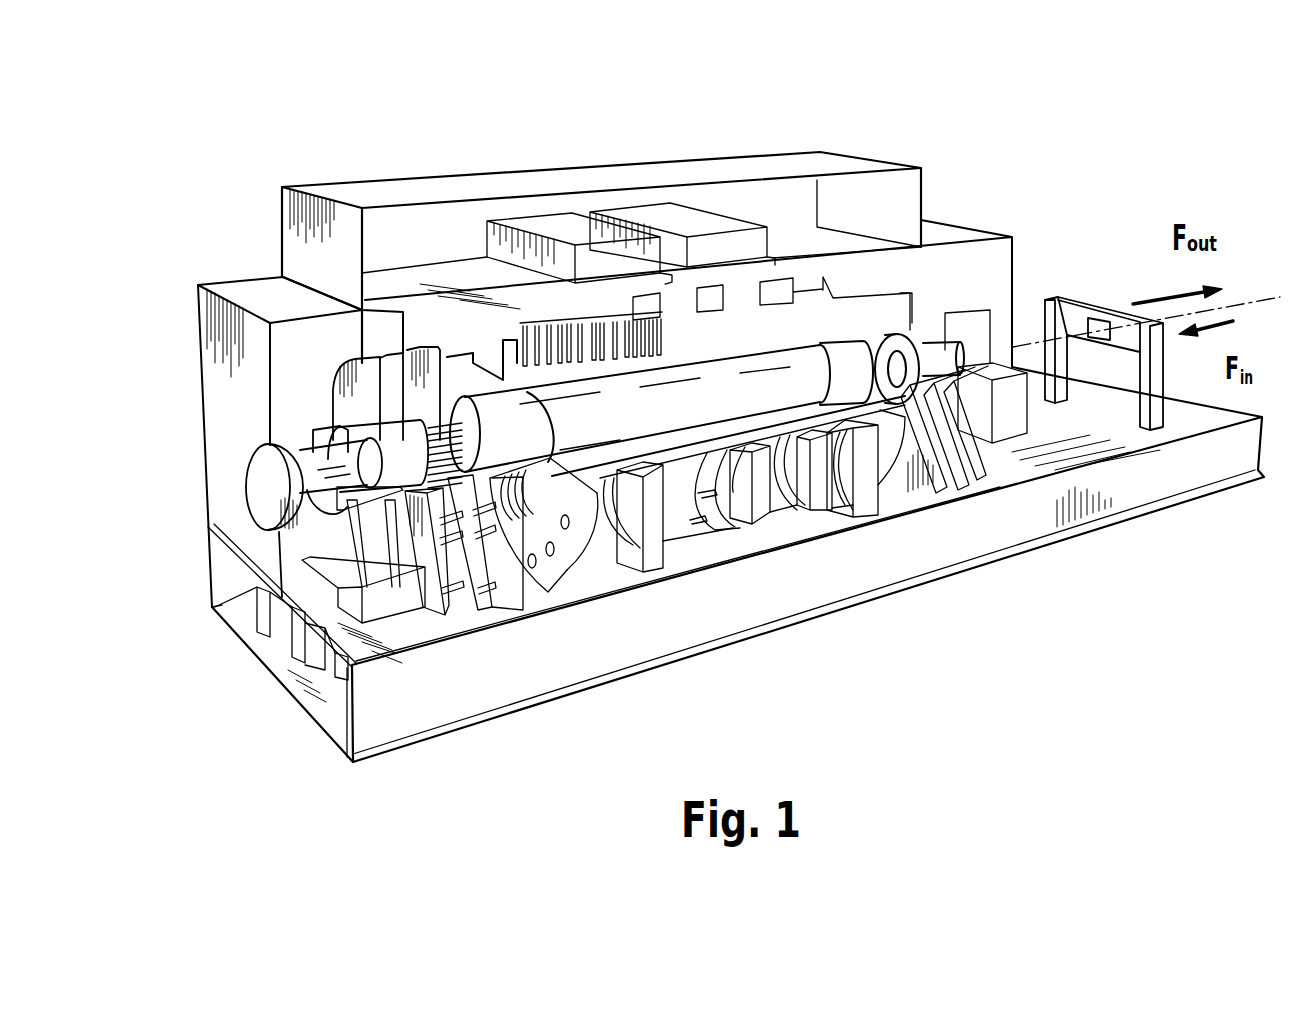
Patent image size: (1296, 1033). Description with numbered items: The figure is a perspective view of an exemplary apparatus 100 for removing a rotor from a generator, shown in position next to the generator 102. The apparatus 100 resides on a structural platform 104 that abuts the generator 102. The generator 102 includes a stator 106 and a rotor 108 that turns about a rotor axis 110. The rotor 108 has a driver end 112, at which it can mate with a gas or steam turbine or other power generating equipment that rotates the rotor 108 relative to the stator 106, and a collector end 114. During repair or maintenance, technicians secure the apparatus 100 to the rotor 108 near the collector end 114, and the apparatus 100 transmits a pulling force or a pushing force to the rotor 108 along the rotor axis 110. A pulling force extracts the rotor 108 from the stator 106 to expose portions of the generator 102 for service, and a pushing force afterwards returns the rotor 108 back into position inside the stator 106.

The apparatus 100 is at (1084, 282).
The generator 102 is at (865, 137).
The structural platform 104 is at (1167, 490).
The stator 106 is at (863, 493).
The rotor 108 is at (933, 355).
The rotor axis 110 is at (1236, 305).
The driver end 112 is at (182, 641).
The collector end 114 is at (1028, 262).